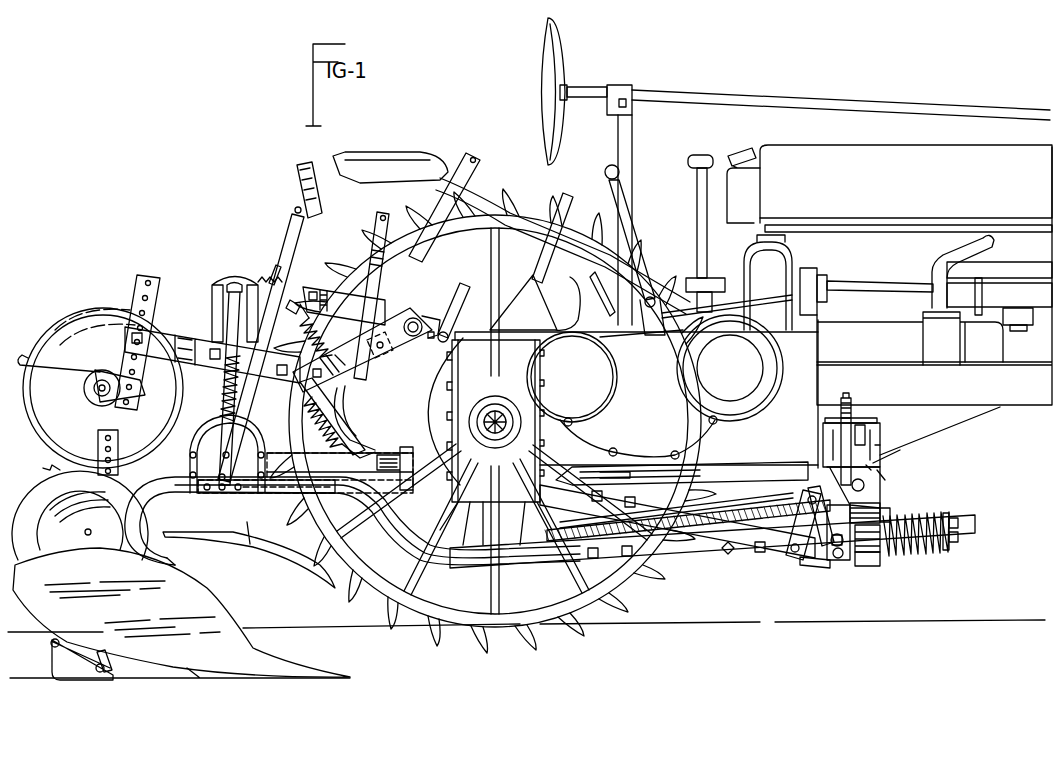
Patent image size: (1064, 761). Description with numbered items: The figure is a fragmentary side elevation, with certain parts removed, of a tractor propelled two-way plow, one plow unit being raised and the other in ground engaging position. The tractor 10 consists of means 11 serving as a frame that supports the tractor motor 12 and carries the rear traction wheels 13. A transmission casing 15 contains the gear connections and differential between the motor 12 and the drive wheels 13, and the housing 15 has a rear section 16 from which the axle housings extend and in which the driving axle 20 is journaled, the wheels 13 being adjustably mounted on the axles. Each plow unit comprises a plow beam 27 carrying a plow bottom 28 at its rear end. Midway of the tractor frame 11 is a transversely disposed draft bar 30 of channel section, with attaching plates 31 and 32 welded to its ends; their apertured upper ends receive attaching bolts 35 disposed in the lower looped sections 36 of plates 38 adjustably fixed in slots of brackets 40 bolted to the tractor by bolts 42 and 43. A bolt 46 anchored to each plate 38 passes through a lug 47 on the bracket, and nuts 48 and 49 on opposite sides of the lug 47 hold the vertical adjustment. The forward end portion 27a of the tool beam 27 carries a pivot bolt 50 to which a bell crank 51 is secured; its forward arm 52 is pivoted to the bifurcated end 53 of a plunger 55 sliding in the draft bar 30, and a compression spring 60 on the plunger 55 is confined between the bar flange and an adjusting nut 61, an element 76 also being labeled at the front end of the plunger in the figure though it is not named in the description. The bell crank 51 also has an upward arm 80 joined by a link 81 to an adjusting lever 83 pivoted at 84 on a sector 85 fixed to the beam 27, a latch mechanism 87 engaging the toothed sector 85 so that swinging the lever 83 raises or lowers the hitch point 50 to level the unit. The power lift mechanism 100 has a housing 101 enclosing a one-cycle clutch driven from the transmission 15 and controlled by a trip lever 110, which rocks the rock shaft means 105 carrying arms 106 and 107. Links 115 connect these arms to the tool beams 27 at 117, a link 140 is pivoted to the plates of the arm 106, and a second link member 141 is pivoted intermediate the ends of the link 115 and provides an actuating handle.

The tractor 10 is at (870, 133).
The frame means 11 is at (1005, 395).
The tractor motor 12 is at (980, 353).
The rear traction wheels 13 is at (537, 228).
The transmission casing 15 is at (562, 462).
The rear section 16 is at (481, 490).
The driving axle 20 is at (486, 420).
The plow beam 27 is at (677, 562).
The forward end portion of tool beam 27a is at (775, 552).
The plow bottom 28 is at (185, 600).
The draft bar 30 is at (870, 555).
The attaching plate 31 is at (820, 503).
The attaching plate 32 is at (876, 506).
The attaching bolt 35 is at (892, 512).
The lower looped section 36 is at (882, 478).
The plate 38 is at (870, 464).
The bracket 40 is at (880, 442).
The bolt 42 is at (873, 425).
The bolt 43 is at (835, 442).
The bolt 46 is at (847, 465).
The lug 47 is at (830, 419).
The nut 48 is at (845, 415).
The nut 49 is at (853, 423).
The pivot bolt 50 is at (794, 557).
The bell crank 51 is at (812, 567).
The bell crank arm 52 is at (824, 548).
The bifurcated end 53 is at (876, 552).
The draft rod or plunger 55 is at (956, 520).
The compression spring 60 is at (913, 517).
The adjusting nut 61 is at (940, 517).
The nut 76 is at (958, 536).
The upwardly disposed arm 80 is at (800, 503).
The link 81 is at (709, 520).
The adjusting lever 83 is at (283, 272).
The pivot 84 is at (228, 438).
The sector 85 is at (175, 450).
The latch mechanism 87 is at (235, 392).
The power lift mechanism 100 is at (433, 312).
The housing 101 is at (405, 375).
The rock shaft means 105 is at (408, 340).
The arm 106 is at (380, 356).
The arm 107 is at (363, 255).
The trip lever 110 is at (458, 290).
The link 115 is at (337, 300).
The pivotal connection 117 is at (358, 512).
The link 140 is at (368, 390).
The second link member 141 is at (380, 400).